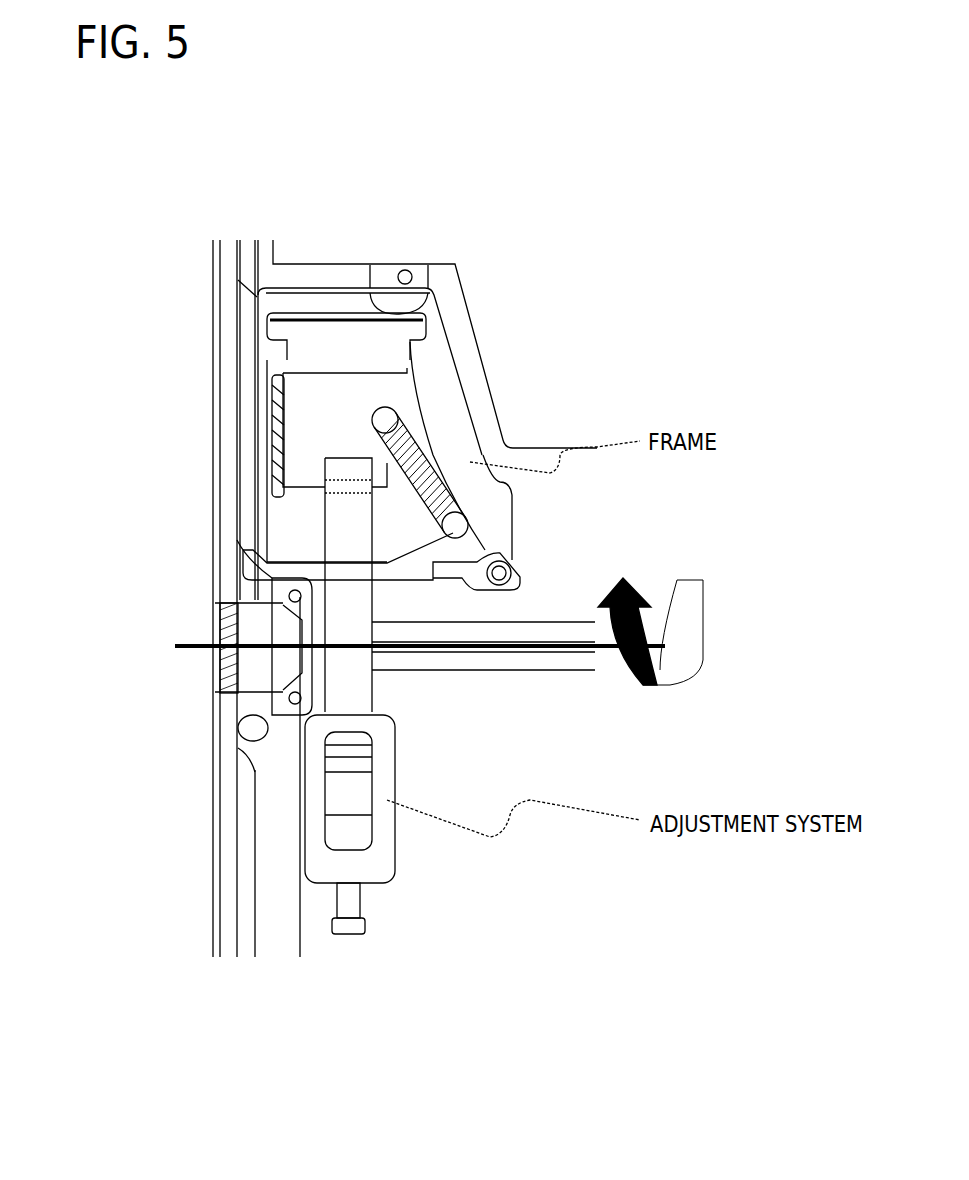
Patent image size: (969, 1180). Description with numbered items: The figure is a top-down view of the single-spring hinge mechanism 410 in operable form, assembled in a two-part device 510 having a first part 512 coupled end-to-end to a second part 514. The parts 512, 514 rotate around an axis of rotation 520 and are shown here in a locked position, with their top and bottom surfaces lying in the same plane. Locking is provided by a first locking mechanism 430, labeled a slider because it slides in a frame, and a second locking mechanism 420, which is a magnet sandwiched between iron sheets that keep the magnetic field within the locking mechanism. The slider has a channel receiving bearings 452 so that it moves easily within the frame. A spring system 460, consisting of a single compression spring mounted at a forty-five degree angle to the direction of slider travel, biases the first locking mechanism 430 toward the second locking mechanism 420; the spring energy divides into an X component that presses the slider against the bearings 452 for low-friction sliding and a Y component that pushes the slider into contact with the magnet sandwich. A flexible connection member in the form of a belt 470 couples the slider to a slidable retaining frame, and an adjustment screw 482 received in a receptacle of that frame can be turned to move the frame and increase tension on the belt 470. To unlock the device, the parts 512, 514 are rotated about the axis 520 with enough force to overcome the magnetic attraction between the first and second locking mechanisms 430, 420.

The hinge mechanism 410 is at (362, 149).
The two-part device 510 is at (622, 212).
The second part 514 is at (215, 248).
The first part 512 is at (217, 803).
The bearings 452 is at (275, 432).
The second locking mechanism 420 is at (387, 333).
The first locking mechanism 430 is at (400, 393).
The spring system 460 is at (467, 520).
The belt 470 is at (355, 690).
The axis of rotation 520 is at (190, 645).
The adjustment screw 482 is at (348, 932).